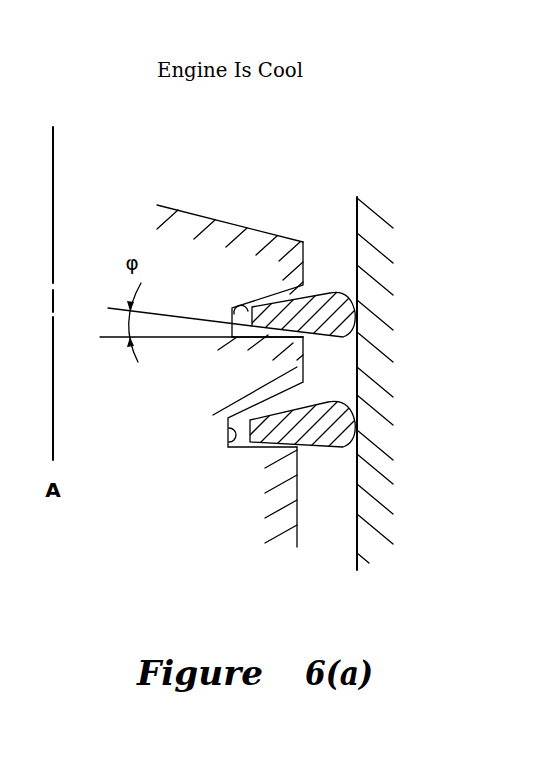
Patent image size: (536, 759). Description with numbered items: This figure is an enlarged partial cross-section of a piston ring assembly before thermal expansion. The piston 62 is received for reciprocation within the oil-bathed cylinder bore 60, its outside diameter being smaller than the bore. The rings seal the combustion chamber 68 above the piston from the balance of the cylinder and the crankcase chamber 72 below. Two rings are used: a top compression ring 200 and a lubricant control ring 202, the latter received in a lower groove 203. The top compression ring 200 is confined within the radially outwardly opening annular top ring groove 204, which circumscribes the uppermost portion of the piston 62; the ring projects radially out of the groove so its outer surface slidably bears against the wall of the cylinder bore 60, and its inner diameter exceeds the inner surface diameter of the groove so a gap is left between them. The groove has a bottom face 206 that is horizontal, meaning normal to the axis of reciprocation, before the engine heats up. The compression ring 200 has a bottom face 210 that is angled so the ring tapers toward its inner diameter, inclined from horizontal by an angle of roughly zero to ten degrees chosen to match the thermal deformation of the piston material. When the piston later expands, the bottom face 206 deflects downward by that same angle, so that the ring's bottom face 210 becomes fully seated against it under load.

The cylinder bore 60 is at (356, 209).
The piston 62 is at (236, 222).
The combustion chamber 68 is at (154, 170).
The crankcase chamber 72 is at (277, 587).
The top compression ring 200 is at (328, 293).
The lubricant control ring 202 is at (326, 402).
The top ring groove 204 is at (235, 306).
The lower groove 203 is at (226, 450).
The bottom face of top ring groove 206 is at (212, 338).
The bottom face of piston ring 210 is at (342, 349).